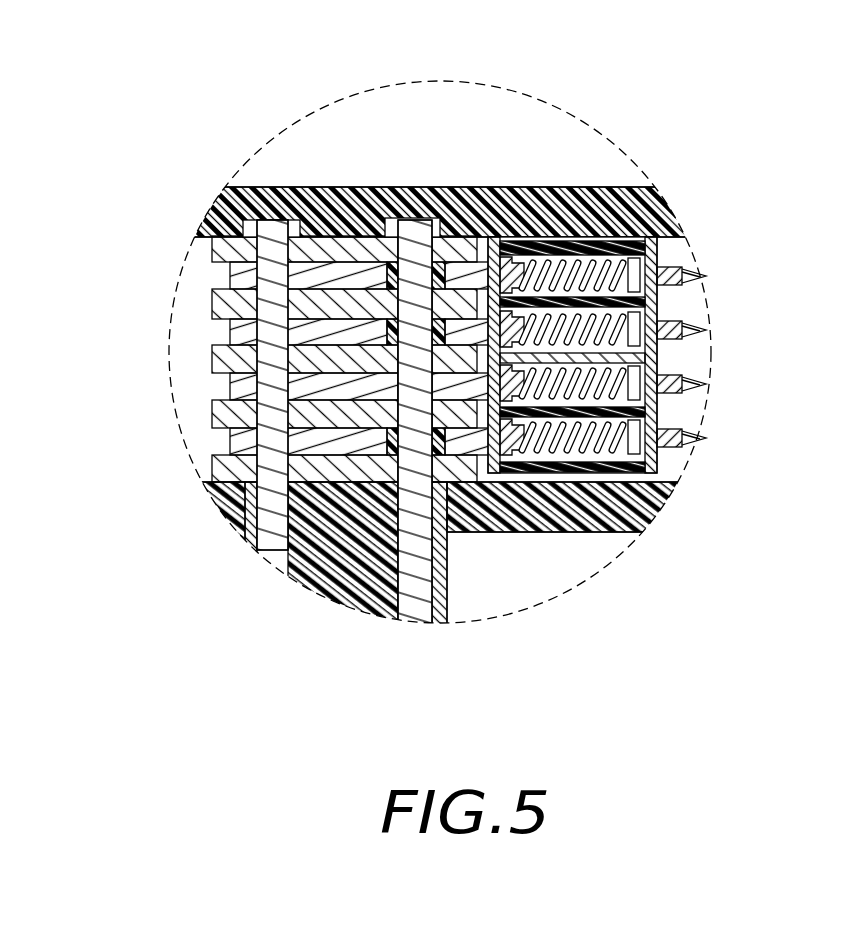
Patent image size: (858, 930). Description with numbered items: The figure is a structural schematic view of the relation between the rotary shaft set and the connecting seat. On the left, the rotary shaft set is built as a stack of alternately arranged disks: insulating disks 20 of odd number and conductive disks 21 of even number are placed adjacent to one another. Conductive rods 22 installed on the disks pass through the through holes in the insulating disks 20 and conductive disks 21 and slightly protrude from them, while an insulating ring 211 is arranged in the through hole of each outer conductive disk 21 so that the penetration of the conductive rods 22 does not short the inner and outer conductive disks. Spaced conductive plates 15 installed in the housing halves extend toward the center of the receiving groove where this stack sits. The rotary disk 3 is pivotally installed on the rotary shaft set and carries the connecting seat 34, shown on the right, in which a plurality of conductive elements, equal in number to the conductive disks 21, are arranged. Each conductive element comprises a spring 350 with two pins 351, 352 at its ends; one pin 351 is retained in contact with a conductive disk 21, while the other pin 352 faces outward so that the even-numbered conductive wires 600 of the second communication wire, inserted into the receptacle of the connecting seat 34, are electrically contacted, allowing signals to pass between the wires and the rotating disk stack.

The rotary disk 3 is at (627, 535).
The conductive plates 15 is at (226, 187).
The insulating disk 20 is at (227, 250).
The conductive disk 21 is at (240, 275).
The conductive rod 22 is at (273, 224).
The connecting seat 34 is at (622, 240).
The insulating ring 211 is at (388, 264).
The spring 350 is at (650, 252).
The pin 351 is at (612, 244).
The pin 352 is at (692, 275).
The conductive wires 600 is at (702, 292).